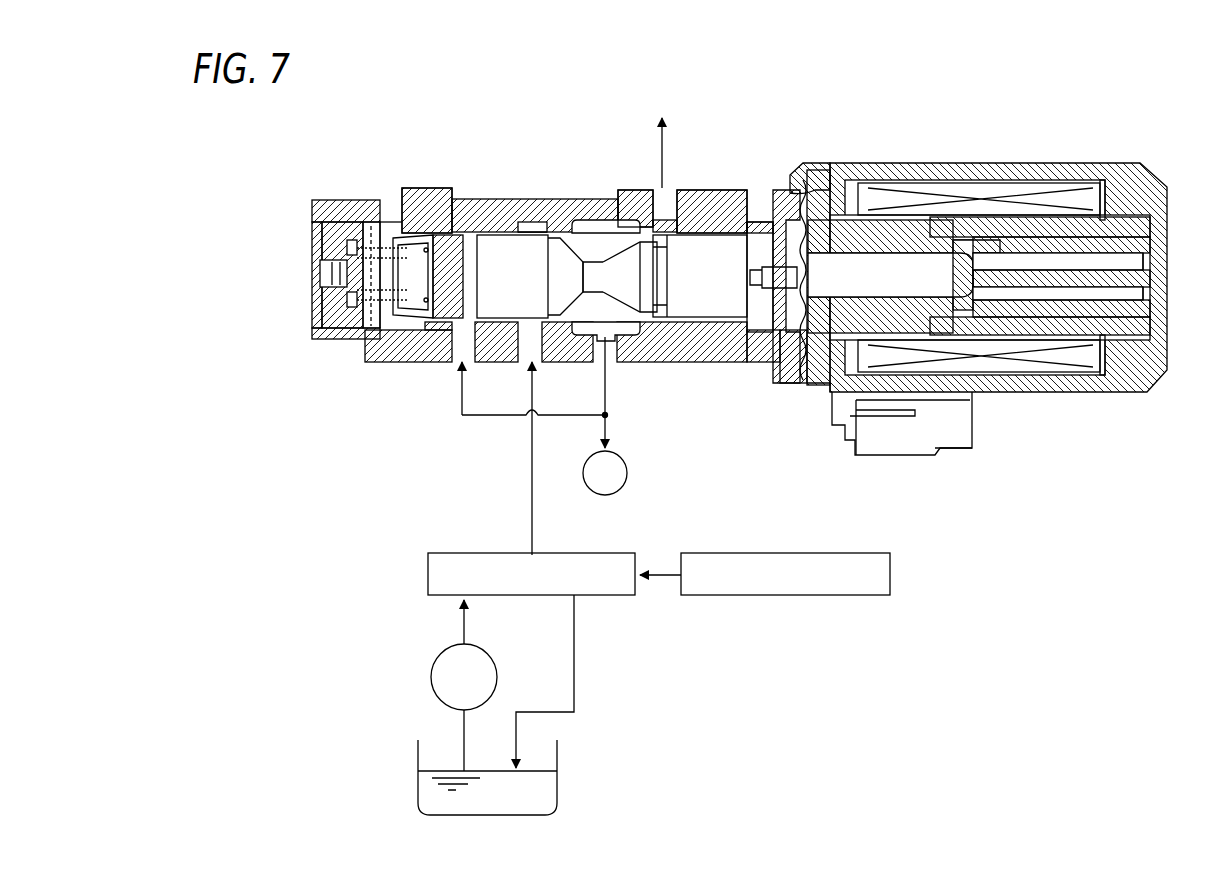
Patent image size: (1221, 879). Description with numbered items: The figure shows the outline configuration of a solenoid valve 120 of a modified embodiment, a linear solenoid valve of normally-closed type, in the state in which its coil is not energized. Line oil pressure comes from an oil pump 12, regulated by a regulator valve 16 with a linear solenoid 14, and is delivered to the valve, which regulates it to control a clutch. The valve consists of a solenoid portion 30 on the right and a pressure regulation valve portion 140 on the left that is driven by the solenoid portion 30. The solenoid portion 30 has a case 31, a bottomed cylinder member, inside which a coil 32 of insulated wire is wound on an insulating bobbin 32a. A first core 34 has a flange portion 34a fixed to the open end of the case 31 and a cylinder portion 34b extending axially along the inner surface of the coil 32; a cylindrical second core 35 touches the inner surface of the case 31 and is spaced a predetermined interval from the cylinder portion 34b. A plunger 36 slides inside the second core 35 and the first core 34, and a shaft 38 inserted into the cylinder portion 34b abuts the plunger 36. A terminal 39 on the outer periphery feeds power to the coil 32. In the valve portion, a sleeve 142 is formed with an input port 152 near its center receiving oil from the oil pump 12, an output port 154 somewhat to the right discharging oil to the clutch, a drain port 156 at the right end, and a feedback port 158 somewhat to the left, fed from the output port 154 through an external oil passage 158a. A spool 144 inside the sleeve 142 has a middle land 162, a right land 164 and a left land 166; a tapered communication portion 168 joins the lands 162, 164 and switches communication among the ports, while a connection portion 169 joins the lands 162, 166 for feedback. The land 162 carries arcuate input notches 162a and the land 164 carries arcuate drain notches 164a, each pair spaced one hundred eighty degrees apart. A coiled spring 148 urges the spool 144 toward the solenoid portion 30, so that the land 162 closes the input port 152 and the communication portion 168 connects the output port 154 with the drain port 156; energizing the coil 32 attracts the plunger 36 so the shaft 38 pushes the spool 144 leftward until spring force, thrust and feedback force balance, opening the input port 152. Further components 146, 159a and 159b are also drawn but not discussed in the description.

The solenoid valve 120 is at (745, 62).
The spool valve 140 is at (585, 113).
The solenoid portion 30 is at (985, 110).
The case 31 is at (1150, 170).
The coil 32 is at (1030, 190).
The insulating bobbin 32a is at (1095, 195).
The first core 34 is at (875, 108).
The flange portion 34a is at (818, 190).
The cylinder portion 34b is at (845, 195).
The second core 35 is at (1140, 220).
The plunger 36 is at (1140, 246).
The shaft 38 is at (905, 265).
The terminal 39 is at (890, 420).
The sleeve 142 is at (718, 188).
The spool 144 is at (588, 228).
The end plug 146 is at (335, 240).
The coiled spring 148 is at (378, 196).
The input port 152 is at (535, 345).
The output port 154 is at (607, 350).
The drain port 156 is at (672, 200).
The feedback port 158 is at (453, 365).
The oil passage 158a is at (500, 418).
The seal ring 159a is at (392, 205).
The seal ring 159b is at (757, 200).
The land 162 is at (503, 297).
The input notches 162a is at (548, 252).
The land 164 is at (740, 362).
The drain notches 164a is at (722, 297).
The land 166 is at (438, 193).
The communication portion 168 is at (627, 250).
The connection portion 169 is at (470, 263).
The oil pump 12 is at (430, 677).
The linear solenoid 14 is at (890, 575).
The regulator valve 16 is at (428, 575).